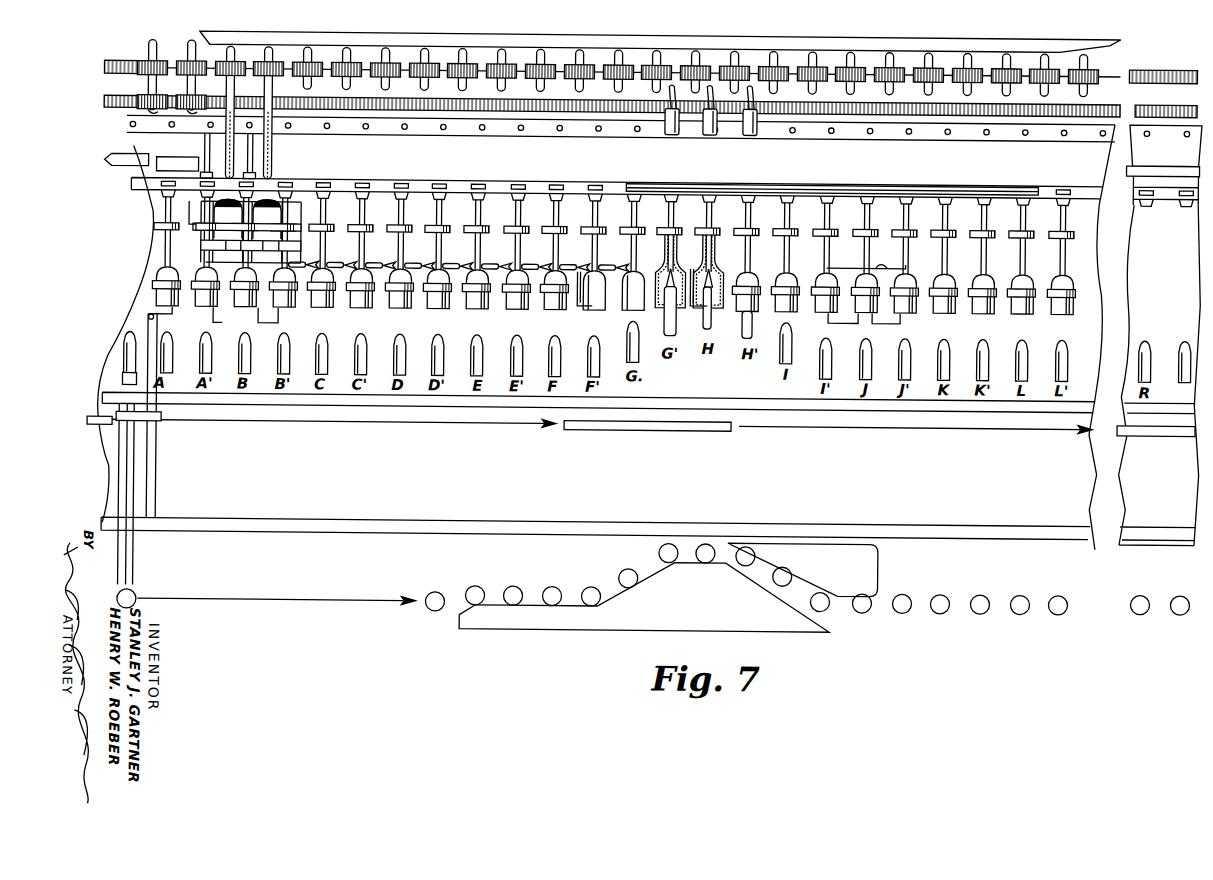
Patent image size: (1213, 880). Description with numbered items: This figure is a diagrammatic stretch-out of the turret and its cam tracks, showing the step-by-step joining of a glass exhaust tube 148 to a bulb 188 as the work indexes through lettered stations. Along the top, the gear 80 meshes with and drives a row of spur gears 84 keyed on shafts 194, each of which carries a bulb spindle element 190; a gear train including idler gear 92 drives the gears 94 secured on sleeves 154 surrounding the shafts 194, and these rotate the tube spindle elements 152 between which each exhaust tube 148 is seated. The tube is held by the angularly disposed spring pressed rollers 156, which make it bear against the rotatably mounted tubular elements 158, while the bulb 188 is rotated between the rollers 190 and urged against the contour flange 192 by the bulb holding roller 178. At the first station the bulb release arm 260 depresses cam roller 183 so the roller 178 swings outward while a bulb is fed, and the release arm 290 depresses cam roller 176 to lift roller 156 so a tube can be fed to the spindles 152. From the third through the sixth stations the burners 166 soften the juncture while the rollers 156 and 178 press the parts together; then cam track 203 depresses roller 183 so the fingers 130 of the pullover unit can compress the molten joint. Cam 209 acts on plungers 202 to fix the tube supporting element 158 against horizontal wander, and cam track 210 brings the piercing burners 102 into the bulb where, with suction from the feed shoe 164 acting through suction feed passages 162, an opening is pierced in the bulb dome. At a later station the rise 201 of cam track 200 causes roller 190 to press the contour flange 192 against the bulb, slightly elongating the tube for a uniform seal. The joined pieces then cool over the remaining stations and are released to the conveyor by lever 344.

The gear 80 is at (130, 66).
The spur gear 84 is at (163, 63).
The idler gear 92 is at (150, 102).
The gear 94 is at (110, 104).
The piercing burner 102 is at (123, 352).
The fingers of the pullover unit 130 is at (578, 312).
The exhaust tube 148 is at (202, 254).
The tube spindle element 152 is at (222, 217).
The sleeve 154 is at (272, 166).
The spring pressed roller 156 is at (200, 232).
The tubular element 158 is at (203, 149).
The suction feed passage 162 is at (403, 130).
The suction feed shoe 164 is at (748, 135).
The burner 166 is at (333, 266).
The cam roller 176 is at (125, 158).
The bulb holding roller 178 is at (155, 284).
The cam roller 183 is at (122, 430).
The bulb 188 is at (158, 302).
The bulb spindle element 190 is at (836, 318).
The contour flange 192 is at (258, 326).
The shaft 194 is at (232, 58).
The cam track 200 is at (752, 35).
The rise of cam track 201 is at (823, 48).
The plunger 202 is at (360, 184).
The cam track 203 is at (662, 431).
The cam 209 is at (647, 184).
The cam track 210 is at (683, 614).
The bulb release arm 260 is at (93, 421).
The release arm 290 is at (188, 178).
The lever 344 is at (1160, 162).